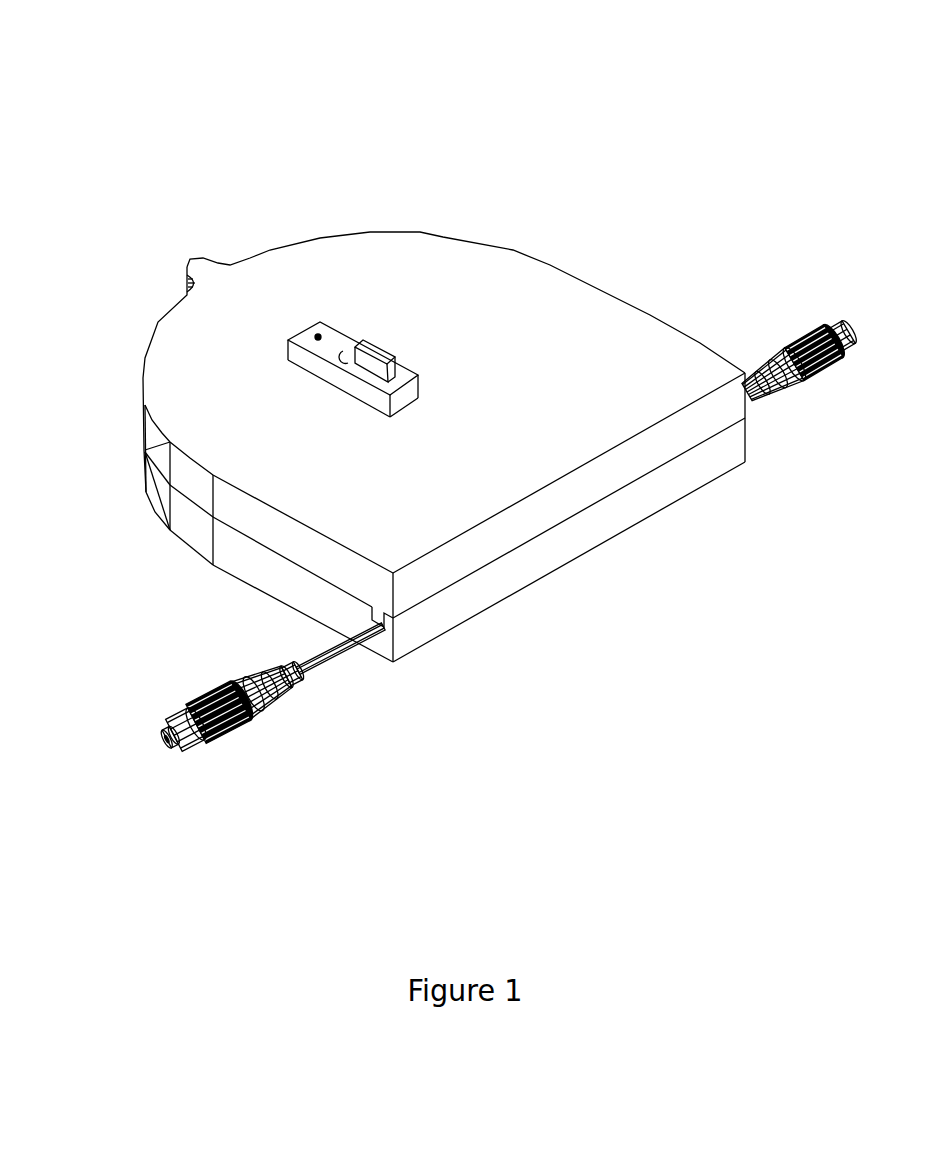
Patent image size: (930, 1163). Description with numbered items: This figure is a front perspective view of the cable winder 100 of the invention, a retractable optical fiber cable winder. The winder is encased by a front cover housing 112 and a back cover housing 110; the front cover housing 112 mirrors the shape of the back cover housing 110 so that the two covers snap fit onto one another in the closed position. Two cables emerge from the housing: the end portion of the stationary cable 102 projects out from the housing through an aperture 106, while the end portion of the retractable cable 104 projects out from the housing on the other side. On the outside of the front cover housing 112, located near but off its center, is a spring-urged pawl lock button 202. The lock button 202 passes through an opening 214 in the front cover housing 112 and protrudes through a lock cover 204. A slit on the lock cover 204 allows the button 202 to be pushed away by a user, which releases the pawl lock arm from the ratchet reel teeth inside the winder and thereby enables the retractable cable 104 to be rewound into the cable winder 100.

The cable winder 100 is at (471, 460).
The stationary cable 102 is at (278, 723).
The retractable cable 104 is at (806, 398).
The aperture 106 is at (380, 635).
The back cover housing 110 is at (379, 515).
The front cover housing 112 is at (288, 545).
The pawl lock button 202 is at (381, 345).
The lock cover 204 is at (302, 336).
The opening 214 is at (353, 350).